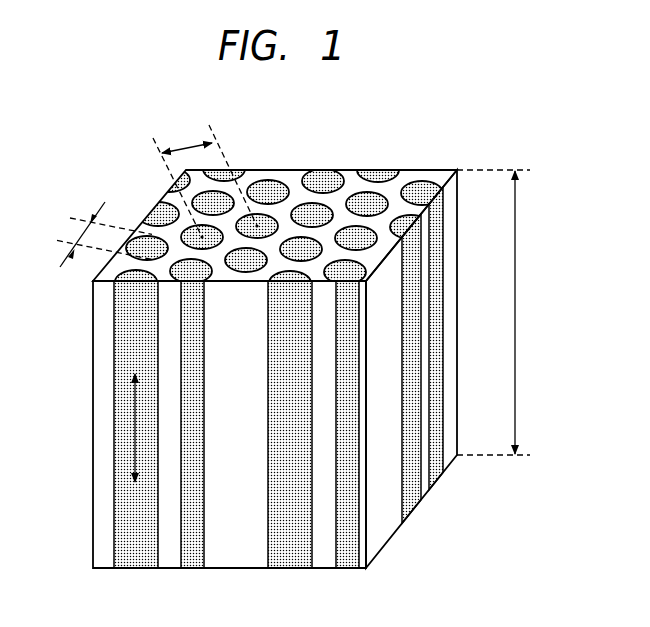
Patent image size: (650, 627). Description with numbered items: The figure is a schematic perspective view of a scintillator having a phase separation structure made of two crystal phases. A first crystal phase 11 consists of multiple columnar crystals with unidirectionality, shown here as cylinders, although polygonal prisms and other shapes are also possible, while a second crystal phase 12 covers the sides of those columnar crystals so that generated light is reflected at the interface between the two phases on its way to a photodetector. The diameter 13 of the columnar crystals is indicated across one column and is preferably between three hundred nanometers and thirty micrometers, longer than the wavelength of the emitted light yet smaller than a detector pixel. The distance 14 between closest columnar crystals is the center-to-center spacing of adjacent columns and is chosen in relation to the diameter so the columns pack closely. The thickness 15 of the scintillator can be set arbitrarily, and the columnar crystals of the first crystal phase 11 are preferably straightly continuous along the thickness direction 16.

The first crystal phase 11 is at (262, 188).
The second crystal phase 12 is at (336, 198).
The diameter of the columnar crystals 13 is at (88, 228).
The distance between closest columnar crystals 14 is at (191, 147).
The thickness of the scintillator 15 is at (517, 307).
The thickness direction (extension direction) 16 is at (134, 423).